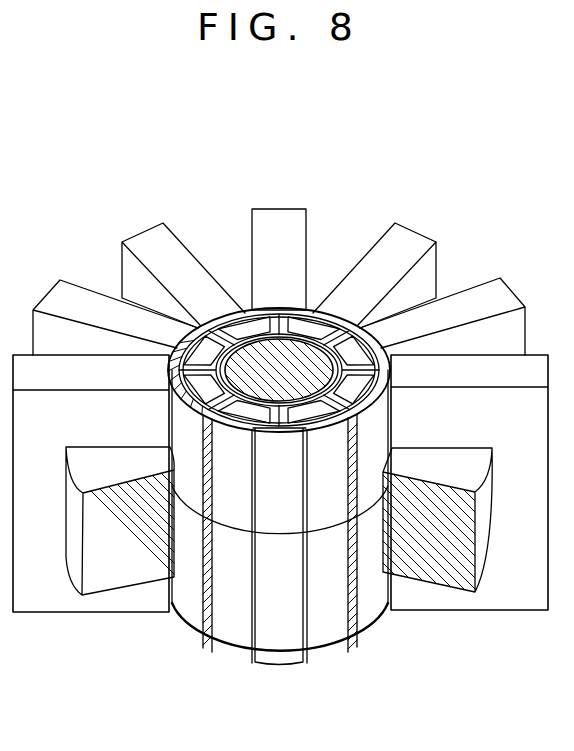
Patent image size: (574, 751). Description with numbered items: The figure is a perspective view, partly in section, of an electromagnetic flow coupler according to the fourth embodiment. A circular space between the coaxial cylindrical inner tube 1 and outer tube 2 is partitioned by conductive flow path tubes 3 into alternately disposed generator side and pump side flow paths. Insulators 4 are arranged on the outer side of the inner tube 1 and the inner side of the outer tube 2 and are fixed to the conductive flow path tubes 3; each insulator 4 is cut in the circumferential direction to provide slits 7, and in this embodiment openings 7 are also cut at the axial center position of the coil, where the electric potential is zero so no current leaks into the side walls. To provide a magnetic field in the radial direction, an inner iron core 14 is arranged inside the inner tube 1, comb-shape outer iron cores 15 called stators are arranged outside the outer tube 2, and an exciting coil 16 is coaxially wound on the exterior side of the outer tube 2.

The inner tube 1 is at (333, 348).
The outer tube 2 is at (392, 368).
The conductive flow path tube 3 is at (182, 350).
The insulator 4 is at (323, 452).
The slit 7 is at (323, 541).
The inner iron core 14 is at (273, 356).
The comb-shape outer iron core 15 is at (422, 240).
The exciting coil 16 is at (467, 583).